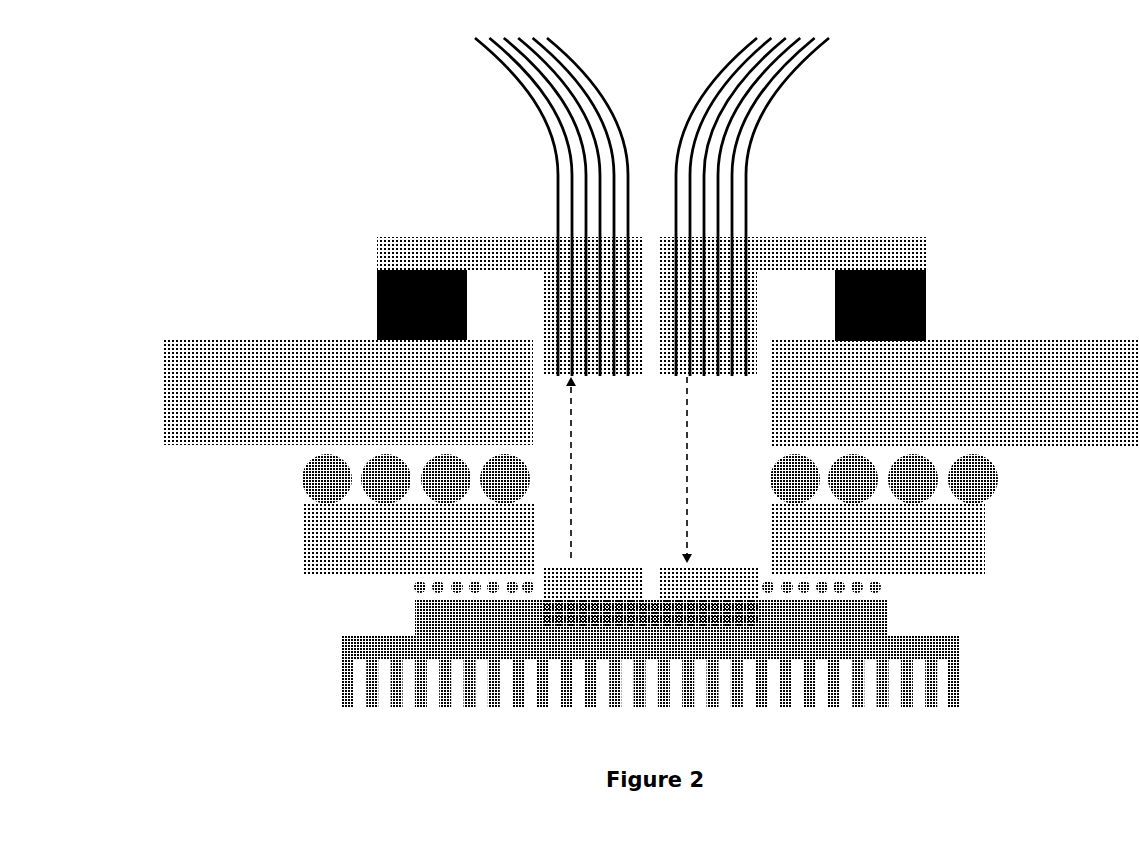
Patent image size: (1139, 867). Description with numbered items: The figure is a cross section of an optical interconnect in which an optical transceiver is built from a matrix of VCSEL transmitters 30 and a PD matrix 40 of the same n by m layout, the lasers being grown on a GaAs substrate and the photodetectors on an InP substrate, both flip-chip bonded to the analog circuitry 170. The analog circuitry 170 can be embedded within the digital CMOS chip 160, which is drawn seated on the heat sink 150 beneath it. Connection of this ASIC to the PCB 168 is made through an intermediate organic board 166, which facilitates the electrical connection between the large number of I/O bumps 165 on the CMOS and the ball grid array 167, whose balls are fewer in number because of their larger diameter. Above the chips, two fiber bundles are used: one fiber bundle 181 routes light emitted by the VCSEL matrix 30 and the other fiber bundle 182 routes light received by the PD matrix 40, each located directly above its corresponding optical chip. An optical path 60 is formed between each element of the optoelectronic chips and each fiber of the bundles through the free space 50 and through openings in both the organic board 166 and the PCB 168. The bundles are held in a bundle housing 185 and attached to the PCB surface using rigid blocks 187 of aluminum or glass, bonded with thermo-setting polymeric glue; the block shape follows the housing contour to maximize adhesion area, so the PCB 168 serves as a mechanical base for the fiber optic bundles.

The fiber bundle 181 is at (505, 103).
The fiber bundle 182 is at (773, 97).
The bundle housing 185 is at (898, 237).
The block 187 is at (948, 303).
The PCB 168 is at (268, 338).
The ball grid array (BGA) 167 is at (1007, 495).
The organic board 166 is at (303, 563).
The I/O bumps 165 is at (885, 592).
The digital CMOS chip 160 is at (403, 619).
The analog circuitry 170 is at (650, 614).
The VCSEL transmitters 30 is at (592, 584).
The PD matrix 40 is at (708, 584).
The heat sink 150 is at (337, 687).
The optical path 60 is at (572, 477).
The free space 50 is at (629, 472).